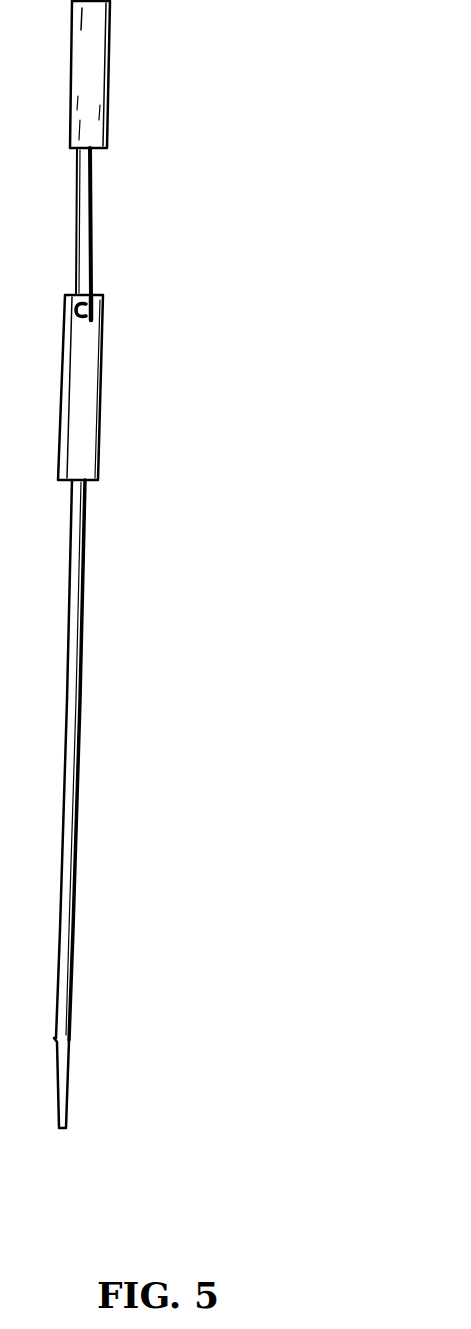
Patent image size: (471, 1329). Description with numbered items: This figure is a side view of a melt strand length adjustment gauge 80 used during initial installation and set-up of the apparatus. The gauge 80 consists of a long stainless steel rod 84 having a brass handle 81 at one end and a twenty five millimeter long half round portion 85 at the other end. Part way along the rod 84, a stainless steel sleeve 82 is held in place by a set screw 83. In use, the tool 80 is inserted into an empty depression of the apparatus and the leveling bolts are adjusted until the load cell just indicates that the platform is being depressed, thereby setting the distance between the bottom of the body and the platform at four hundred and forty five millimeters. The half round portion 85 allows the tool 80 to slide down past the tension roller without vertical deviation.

The melt strand length adjustment gauge 80 is at (258, 392).
The brass handle 81 is at (99, 69).
The stainless steel sleeve 82 is at (83, 365).
The set screw 83 is at (103, 297).
The stainless steel rod 84 is at (80, 640).
The half round portion 85 is at (64, 1081).